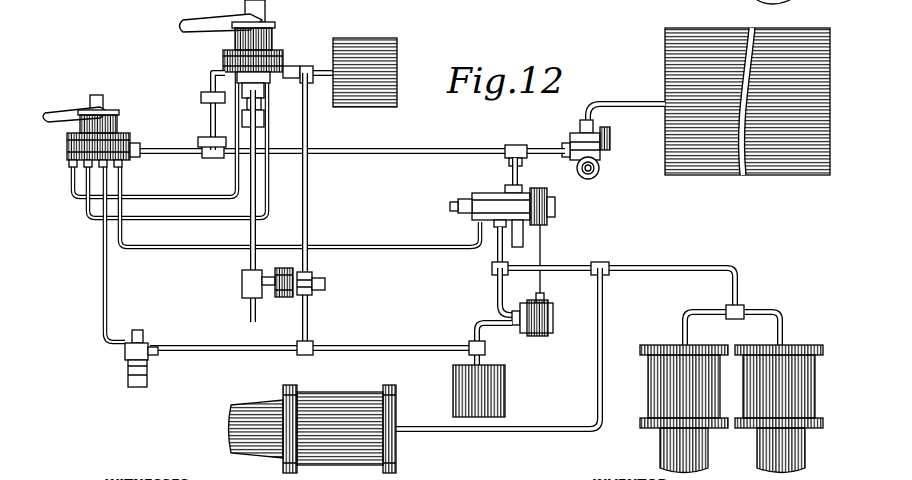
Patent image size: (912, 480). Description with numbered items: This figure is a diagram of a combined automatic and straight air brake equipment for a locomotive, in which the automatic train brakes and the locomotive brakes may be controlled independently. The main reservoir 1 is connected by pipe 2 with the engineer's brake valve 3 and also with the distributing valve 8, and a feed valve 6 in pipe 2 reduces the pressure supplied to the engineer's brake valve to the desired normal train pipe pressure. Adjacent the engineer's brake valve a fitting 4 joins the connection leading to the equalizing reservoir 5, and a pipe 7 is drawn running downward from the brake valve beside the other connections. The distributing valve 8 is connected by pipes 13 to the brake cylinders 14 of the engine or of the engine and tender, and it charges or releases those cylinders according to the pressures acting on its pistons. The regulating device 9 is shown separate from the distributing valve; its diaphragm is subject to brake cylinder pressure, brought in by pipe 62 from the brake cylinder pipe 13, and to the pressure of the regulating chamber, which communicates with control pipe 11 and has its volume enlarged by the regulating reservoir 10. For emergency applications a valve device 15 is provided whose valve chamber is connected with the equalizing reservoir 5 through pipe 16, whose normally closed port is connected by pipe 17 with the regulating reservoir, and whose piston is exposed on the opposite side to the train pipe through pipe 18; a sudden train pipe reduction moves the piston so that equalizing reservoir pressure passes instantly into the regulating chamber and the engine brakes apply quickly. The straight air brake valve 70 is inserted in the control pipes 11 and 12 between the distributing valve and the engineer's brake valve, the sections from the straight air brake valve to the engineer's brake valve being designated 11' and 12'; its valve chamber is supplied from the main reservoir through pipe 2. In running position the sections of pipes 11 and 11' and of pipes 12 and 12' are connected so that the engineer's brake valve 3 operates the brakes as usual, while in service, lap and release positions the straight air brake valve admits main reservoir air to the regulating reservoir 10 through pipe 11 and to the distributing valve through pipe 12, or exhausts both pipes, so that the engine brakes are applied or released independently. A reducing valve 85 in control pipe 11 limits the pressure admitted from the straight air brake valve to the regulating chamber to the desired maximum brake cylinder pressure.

The main reservoir 1 is at (667, 58).
The pipe 2 is at (348, 157).
The engineer's brake valve 3 is at (278, 40).
The tee coupling 4 is at (313, 74).
The equalizing reservoir 5 is at (368, 107).
The feed valve 6 is at (579, 134).
The pipe 7 is at (258, 230).
The distributing valve 8 is at (503, 192).
The regulating device 9 is at (548, 310).
The regulating reservoir 10 is at (505, 380).
The control pipe 11 is at (279, 257).
The control pipe section 11' is at (155, 134).
The control pipe 12 is at (300, 222).
The control pipe section 12' is at (177, 158).
The brake cylinder pipe 13 is at (578, 268).
The brake cylinder 14 is at (350, 390).
The valve device 15 is at (312, 275).
The pipe 16 is at (307, 205).
The pipe 17 is at (307, 313).
The pipe 18 is at (262, 300).
The pipe 62 is at (498, 305).
The straight air brake valve 70 is at (122, 122).
The reducing valve 85 is at (148, 344).